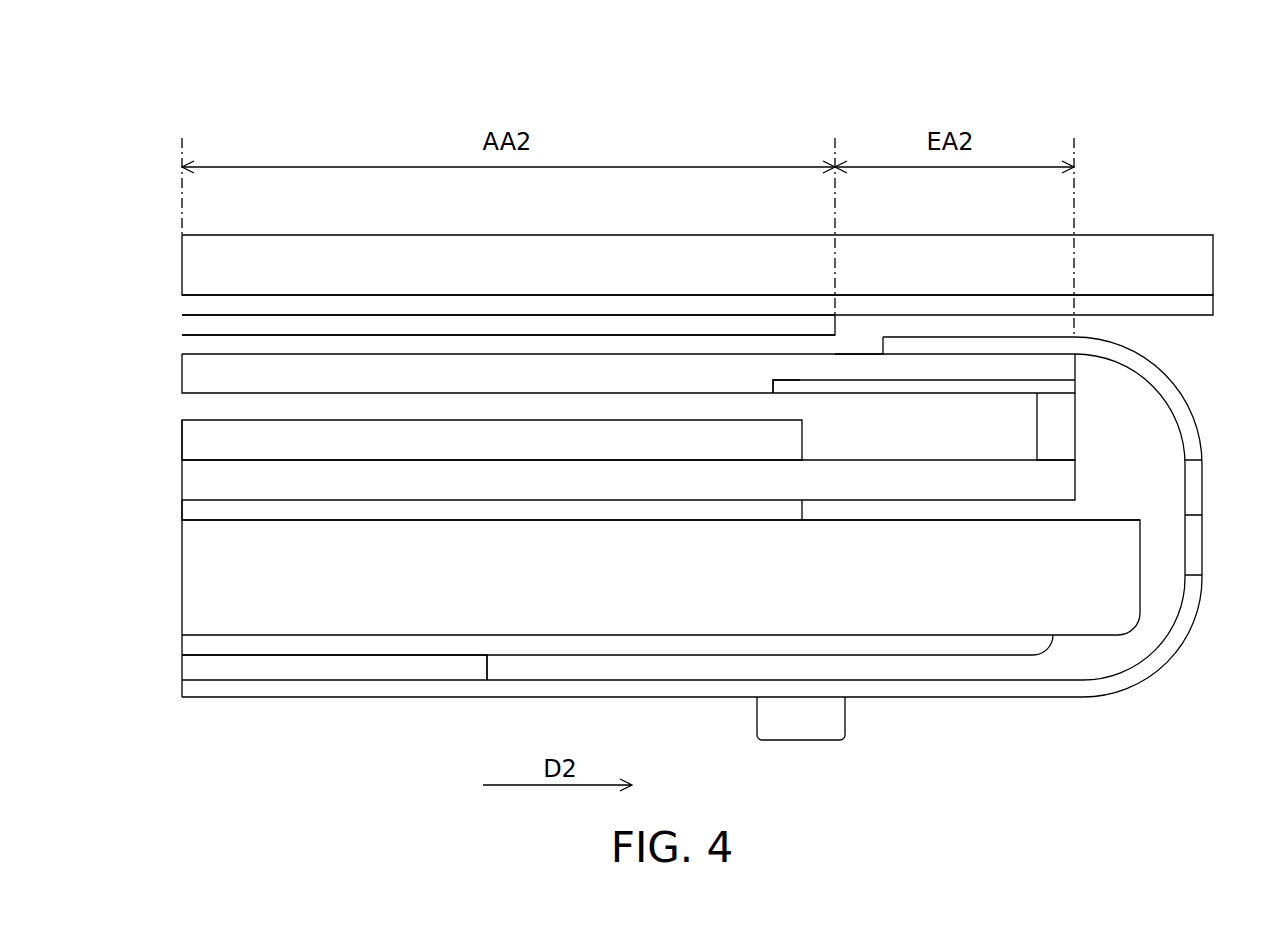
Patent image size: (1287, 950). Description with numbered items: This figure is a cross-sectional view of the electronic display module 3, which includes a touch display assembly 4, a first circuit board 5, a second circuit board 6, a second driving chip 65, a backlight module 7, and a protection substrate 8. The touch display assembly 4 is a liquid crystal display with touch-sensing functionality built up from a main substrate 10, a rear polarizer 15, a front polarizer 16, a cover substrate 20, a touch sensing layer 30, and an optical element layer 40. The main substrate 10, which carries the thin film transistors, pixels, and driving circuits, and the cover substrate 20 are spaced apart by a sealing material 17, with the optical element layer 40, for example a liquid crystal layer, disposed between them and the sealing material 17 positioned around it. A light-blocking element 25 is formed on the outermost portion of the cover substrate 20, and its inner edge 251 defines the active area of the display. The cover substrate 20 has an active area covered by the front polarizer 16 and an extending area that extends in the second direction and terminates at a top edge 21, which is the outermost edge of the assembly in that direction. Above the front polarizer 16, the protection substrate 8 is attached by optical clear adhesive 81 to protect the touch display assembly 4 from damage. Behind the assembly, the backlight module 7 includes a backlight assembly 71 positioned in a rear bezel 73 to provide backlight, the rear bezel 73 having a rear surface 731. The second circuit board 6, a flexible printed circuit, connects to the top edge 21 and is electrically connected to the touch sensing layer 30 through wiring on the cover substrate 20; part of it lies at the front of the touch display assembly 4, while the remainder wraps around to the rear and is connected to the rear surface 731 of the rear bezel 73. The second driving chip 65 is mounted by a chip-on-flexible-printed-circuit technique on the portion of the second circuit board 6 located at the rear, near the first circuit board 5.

The electronic display module 3 is at (148, 128).
The protection substrate 8 is at (196, 261).
The optical clear adhesive 81 is at (196, 292).
The front polarizer 16 is at (196, 321).
The touch sensing layer 30 is at (196, 348).
The touch display assembly 4 is at (871, 331).
The top edge 21 is at (1077, 373).
The cover substrate 20 is at (196, 379).
The light-blocking element 25 is at (960, 386).
The inner edge 251 is at (768, 384).
The sealing material 17 is at (1057, 438).
The second circuit board 6 is at (1197, 386).
The optical element layer 40 is at (196, 439).
The main substrate 10 is at (196, 477).
The rear polarizer 15 is at (196, 511).
The backlight module 7 is at (160, 562).
The backlight assembly 71 is at (196, 594).
The rear bezel 73 is at (196, 646).
The rear surface 731 is at (210, 657).
The first circuit board 5 is at (347, 670).
The second driving chip 65 is at (807, 752).